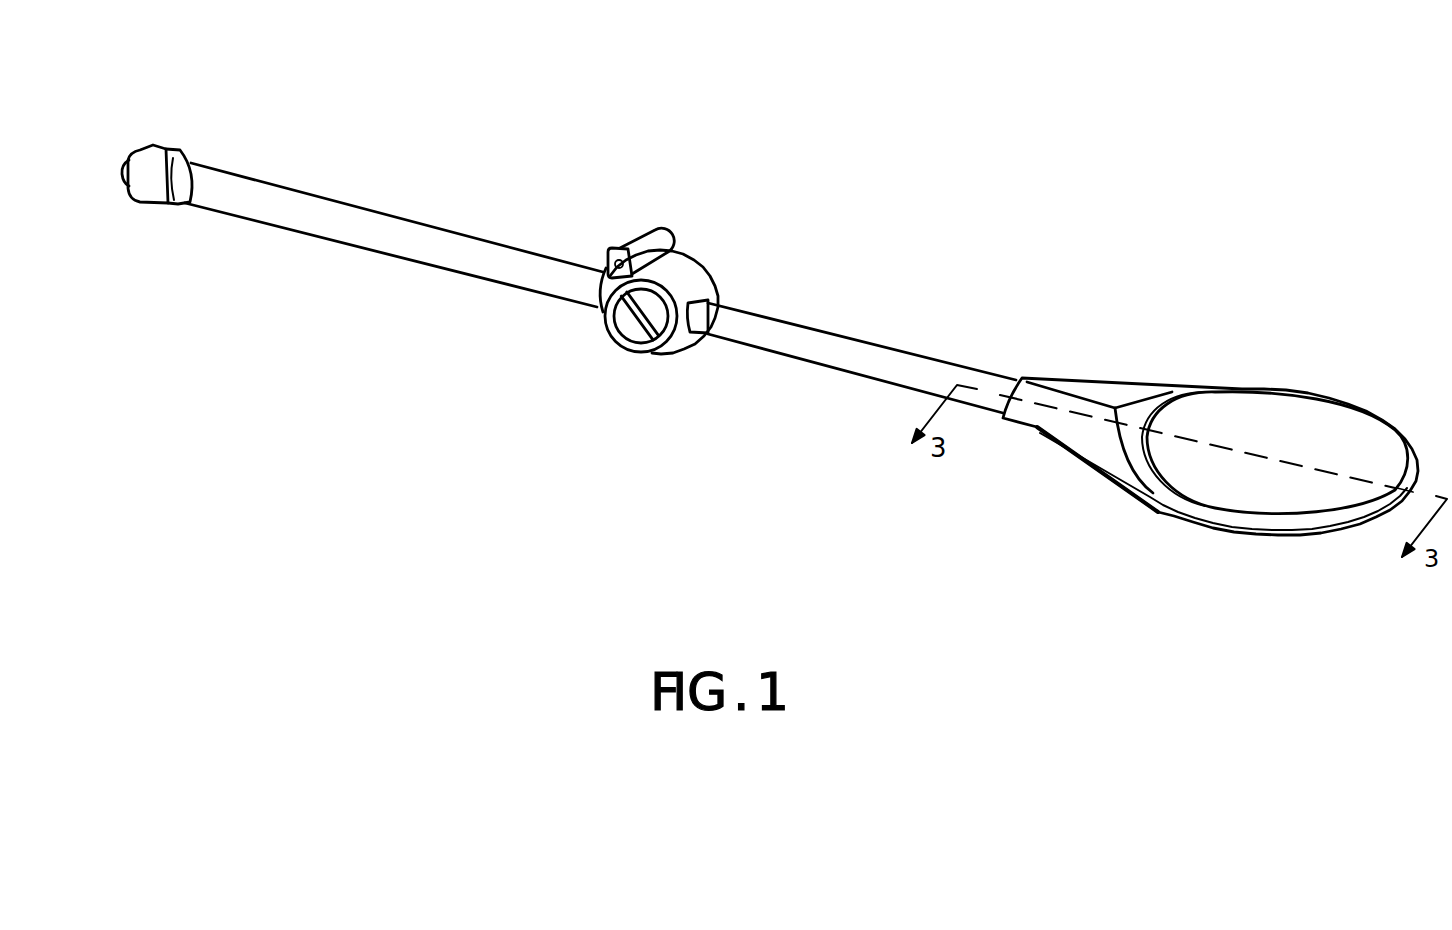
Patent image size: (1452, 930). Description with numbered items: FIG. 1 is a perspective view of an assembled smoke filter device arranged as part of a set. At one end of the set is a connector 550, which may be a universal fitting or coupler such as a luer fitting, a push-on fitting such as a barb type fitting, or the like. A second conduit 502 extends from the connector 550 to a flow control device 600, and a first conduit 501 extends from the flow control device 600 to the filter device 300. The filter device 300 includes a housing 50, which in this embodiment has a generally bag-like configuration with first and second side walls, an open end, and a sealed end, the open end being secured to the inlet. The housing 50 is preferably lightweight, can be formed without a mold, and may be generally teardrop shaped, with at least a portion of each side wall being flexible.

The connector 550 is at (166, 155).
The second conduit 502 is at (460, 260).
The flow control device 600 is at (697, 278).
The first conduit 501 is at (892, 372).
The housing 50 is at (1230, 533).
The filter device 300 is at (1373, 324).